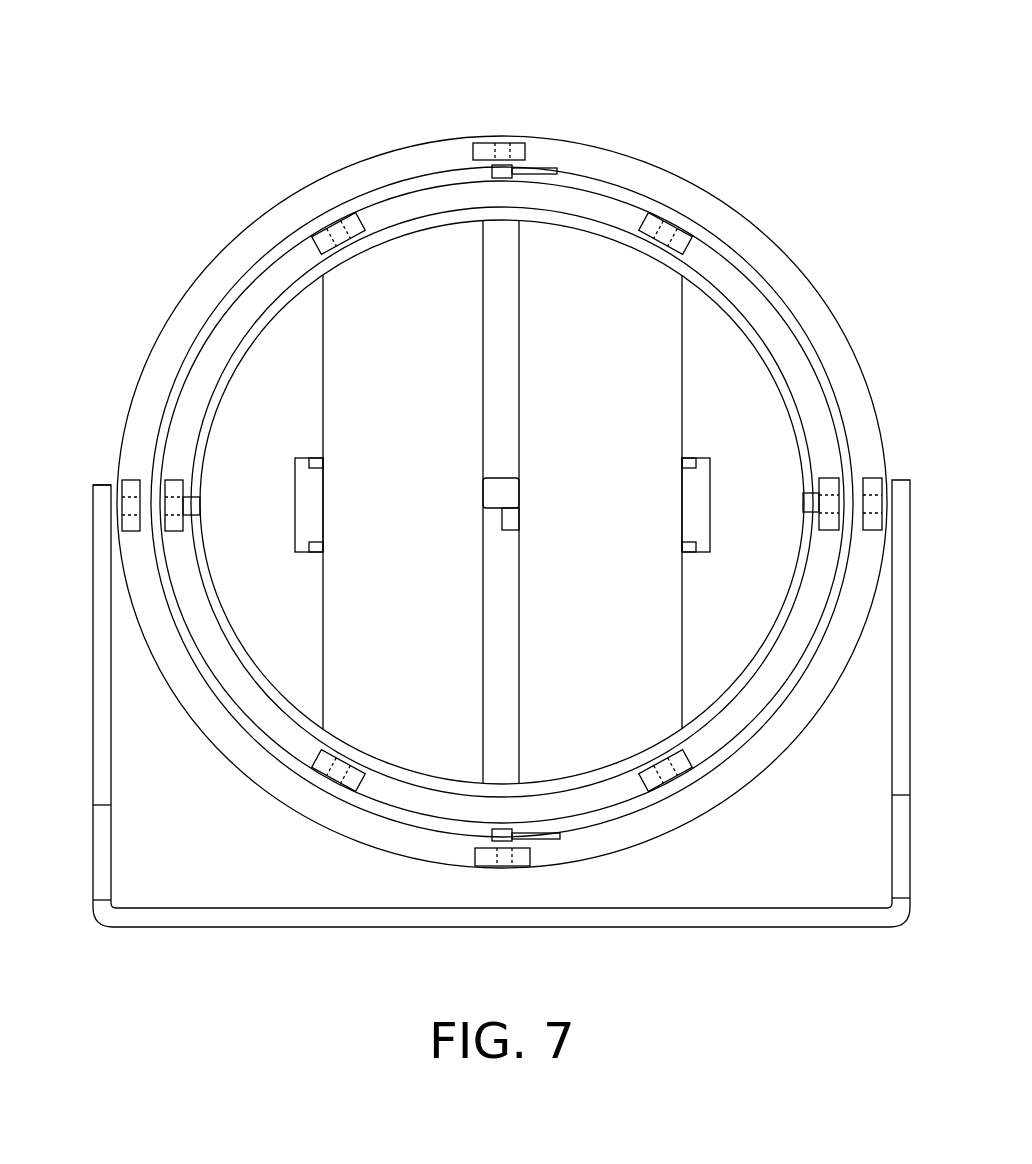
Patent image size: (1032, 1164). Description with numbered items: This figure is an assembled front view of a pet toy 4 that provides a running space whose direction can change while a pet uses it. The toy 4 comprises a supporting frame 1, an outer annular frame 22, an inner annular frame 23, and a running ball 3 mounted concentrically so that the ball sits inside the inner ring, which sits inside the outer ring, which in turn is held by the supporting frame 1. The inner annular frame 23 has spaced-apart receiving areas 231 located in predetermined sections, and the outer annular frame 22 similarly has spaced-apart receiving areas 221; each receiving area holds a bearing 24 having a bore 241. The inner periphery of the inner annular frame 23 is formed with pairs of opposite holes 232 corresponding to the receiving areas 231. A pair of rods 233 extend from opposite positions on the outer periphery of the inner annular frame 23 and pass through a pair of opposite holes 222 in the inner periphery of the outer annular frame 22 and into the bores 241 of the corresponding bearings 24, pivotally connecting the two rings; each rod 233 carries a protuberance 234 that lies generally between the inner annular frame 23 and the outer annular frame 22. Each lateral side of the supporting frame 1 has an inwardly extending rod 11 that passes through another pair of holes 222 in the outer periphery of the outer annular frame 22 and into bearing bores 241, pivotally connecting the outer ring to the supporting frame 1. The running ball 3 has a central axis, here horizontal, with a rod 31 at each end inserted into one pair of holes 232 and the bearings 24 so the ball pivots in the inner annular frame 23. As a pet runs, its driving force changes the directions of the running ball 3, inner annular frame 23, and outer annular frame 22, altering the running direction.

The supporting frame 1 is at (267, 915).
The rod 11 is at (117, 500).
The running ball 3 is at (747, 413).
The rod 31 is at (197, 515).
The toy 4 is at (172, 207).
The outer annular frame 22 is at (685, 198).
The receiving area 221 is at (133, 487).
The hole 222 is at (522, 145).
The inner annular frame 23 is at (763, 315).
The receiving area 231 is at (685, 243).
The hole 232 is at (365, 222).
The rod 233 is at (493, 172).
The protuberance 234 is at (557, 172).
The bearing 24 is at (482, 153).
The bore 241 is at (503, 150).